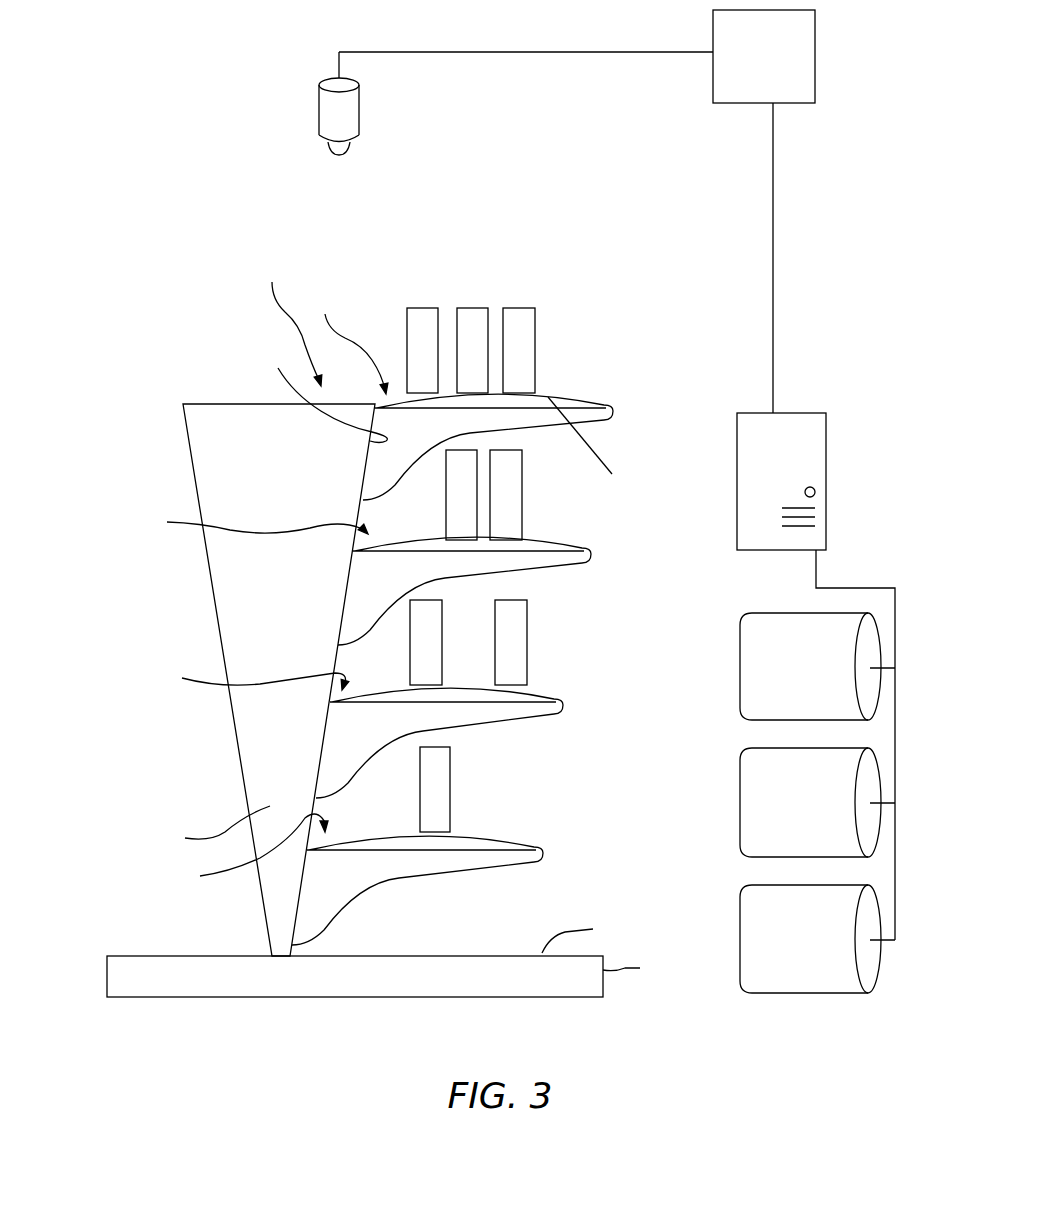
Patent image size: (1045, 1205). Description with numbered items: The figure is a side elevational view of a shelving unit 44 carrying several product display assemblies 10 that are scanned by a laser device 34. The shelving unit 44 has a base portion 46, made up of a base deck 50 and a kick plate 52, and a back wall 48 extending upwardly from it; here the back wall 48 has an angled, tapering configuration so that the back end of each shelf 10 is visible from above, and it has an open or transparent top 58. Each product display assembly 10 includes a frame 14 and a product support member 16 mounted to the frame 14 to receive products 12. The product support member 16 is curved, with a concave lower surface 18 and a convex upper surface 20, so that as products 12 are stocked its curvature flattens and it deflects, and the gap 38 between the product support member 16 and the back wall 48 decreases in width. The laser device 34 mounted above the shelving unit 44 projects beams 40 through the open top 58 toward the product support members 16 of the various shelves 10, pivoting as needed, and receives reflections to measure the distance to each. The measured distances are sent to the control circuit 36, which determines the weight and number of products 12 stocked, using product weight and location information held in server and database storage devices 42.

The product display assembly 10 is at (613, 415).
The products 12 is at (535, 318).
The frame 14 is at (597, 417).
The product support member 16 is at (607, 405).
The lower surface 18 is at (594, 448).
The upper surface 20 is at (565, 402).
The laser device 34 is at (359, 133).
The control circuit 36 is at (815, 38).
The gap 38 is at (261, 590).
The light beam reflection 40 is at (325, 394).
The storage devices 42 is at (826, 429).
The shelving unit 44 is at (172, 413).
The base portion 46 is at (507, 983).
The back wall 48 is at (214, 825).
The base deck 50 is at (581, 934).
The kick plate 52 is at (634, 969).
The open or transparent top 58 is at (292, 323).